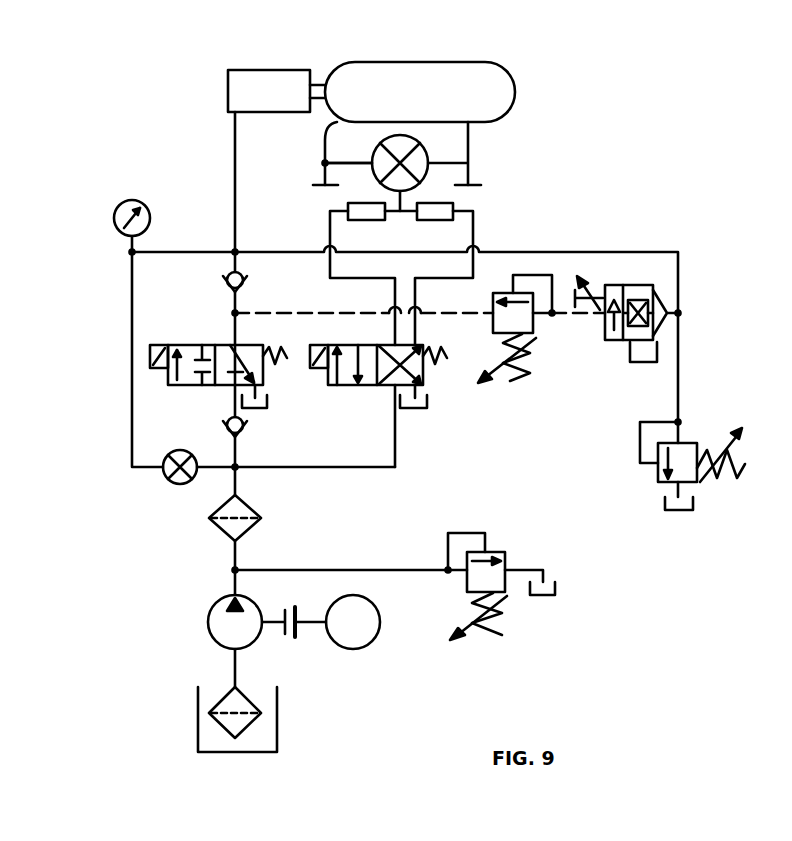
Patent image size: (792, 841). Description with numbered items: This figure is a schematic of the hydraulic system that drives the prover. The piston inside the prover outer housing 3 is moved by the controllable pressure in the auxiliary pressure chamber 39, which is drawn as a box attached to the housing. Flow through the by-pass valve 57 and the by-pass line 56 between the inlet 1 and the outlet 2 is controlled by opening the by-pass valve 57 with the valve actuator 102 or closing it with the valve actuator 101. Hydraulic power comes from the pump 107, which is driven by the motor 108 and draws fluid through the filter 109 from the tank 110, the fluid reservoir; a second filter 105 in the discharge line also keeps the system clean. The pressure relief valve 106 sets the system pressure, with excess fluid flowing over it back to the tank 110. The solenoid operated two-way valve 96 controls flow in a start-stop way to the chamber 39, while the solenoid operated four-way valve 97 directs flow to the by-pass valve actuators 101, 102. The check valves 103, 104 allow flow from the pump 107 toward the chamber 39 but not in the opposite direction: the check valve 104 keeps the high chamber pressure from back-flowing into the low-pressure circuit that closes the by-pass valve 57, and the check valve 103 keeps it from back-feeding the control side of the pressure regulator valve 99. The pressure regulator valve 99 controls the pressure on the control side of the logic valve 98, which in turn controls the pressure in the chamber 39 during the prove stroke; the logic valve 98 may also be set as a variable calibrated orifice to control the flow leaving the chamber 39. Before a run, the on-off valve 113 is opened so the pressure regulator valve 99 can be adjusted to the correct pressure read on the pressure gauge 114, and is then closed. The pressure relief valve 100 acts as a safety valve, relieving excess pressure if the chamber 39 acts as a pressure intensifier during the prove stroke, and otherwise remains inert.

The inlet 1 is at (483, 186).
The outlet 2 is at (318, 186).
The prover outer housing 3 is at (452, 62).
The auxiliary pressure chamber 39 is at (276, 70).
The by-pass line 56 is at (338, 165).
The by-pass valve 57 is at (414, 140).
The solenoid operated two-way valve 96 is at (197, 386).
The solenoid operated four-way valve 97 is at (370, 386).
The logic valve 98 is at (618, 342).
The pressure regulator valve 99 is at (493, 316).
The pressure relief valve 100 is at (658, 470).
The valve actuator 101 is at (360, 221).
The valve actuator 102 is at (453, 204).
The check valve 103 is at (222, 290).
The check valve 104 is at (226, 431).
The filter 105 is at (222, 532).
The pressure relief valve 106 is at (506, 563).
The pump 107 is at (208, 636).
The motor 108 is at (355, 649).
The filter 109 is at (248, 700).
The tank 110 is at (277, 735).
The on-off valve 113 is at (175, 486).
The pressure gauge 114 is at (150, 212).